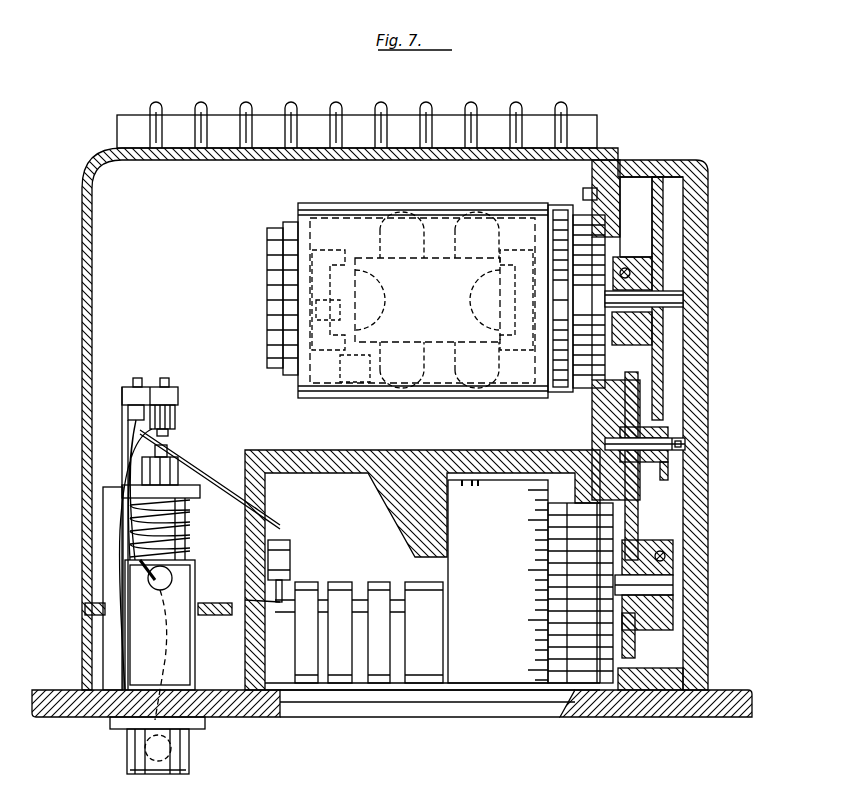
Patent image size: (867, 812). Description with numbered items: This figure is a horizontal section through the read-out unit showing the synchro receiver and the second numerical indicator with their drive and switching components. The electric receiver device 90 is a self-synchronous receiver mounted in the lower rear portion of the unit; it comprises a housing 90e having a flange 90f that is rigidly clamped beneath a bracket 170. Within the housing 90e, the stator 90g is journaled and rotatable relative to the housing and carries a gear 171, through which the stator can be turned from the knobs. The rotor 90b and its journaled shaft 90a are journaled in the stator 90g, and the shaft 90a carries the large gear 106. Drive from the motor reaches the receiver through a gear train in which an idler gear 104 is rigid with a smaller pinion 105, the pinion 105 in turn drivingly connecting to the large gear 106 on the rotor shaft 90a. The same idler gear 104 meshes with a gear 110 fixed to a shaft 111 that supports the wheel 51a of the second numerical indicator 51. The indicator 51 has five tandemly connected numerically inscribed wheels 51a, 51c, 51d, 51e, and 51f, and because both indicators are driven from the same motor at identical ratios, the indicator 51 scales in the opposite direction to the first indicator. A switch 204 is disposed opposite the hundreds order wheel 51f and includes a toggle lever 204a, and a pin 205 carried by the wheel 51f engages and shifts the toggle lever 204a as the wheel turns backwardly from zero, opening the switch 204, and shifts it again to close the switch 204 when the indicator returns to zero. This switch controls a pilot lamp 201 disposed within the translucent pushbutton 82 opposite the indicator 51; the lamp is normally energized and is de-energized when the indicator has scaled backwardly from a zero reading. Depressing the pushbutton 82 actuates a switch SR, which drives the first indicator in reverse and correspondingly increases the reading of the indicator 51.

The electric receiver device 90 is at (355, 203).
The journaled shaft 90a is at (655, 300).
The rotor 90b is at (422, 268).
The housing 90e is at (318, 390).
The flange 90f is at (651, 217).
The stator 90g is at (368, 385).
The bracket 170 is at (592, 188).
The gear 171 is at (560, 210).
The large gear 106 is at (663, 405).
The pinion 105 is at (668, 462).
The idler gear 104 is at (638, 498).
The shaft 111 is at (673, 583).
The gear 110 is at (635, 640).
The second numerical indicator 51 is at (432, 622).
The numerically inscribed wheel 51a is at (500, 683).
The numerically inscribed wheel 51c is at (425, 683).
The numerically inscribed wheel 51d is at (378, 683).
The numerically inscribed wheel 51e is at (340, 683).
The hundreds order wheel 51f is at (308, 683).
The switch 204 is at (290, 550).
The toggle lever 204a is at (280, 585).
The pin 205 is at (268, 598).
The switch SR is at (165, 400).
The pushbutton 82 is at (178, 762).
The pilot lamp 201 is at (150, 748).